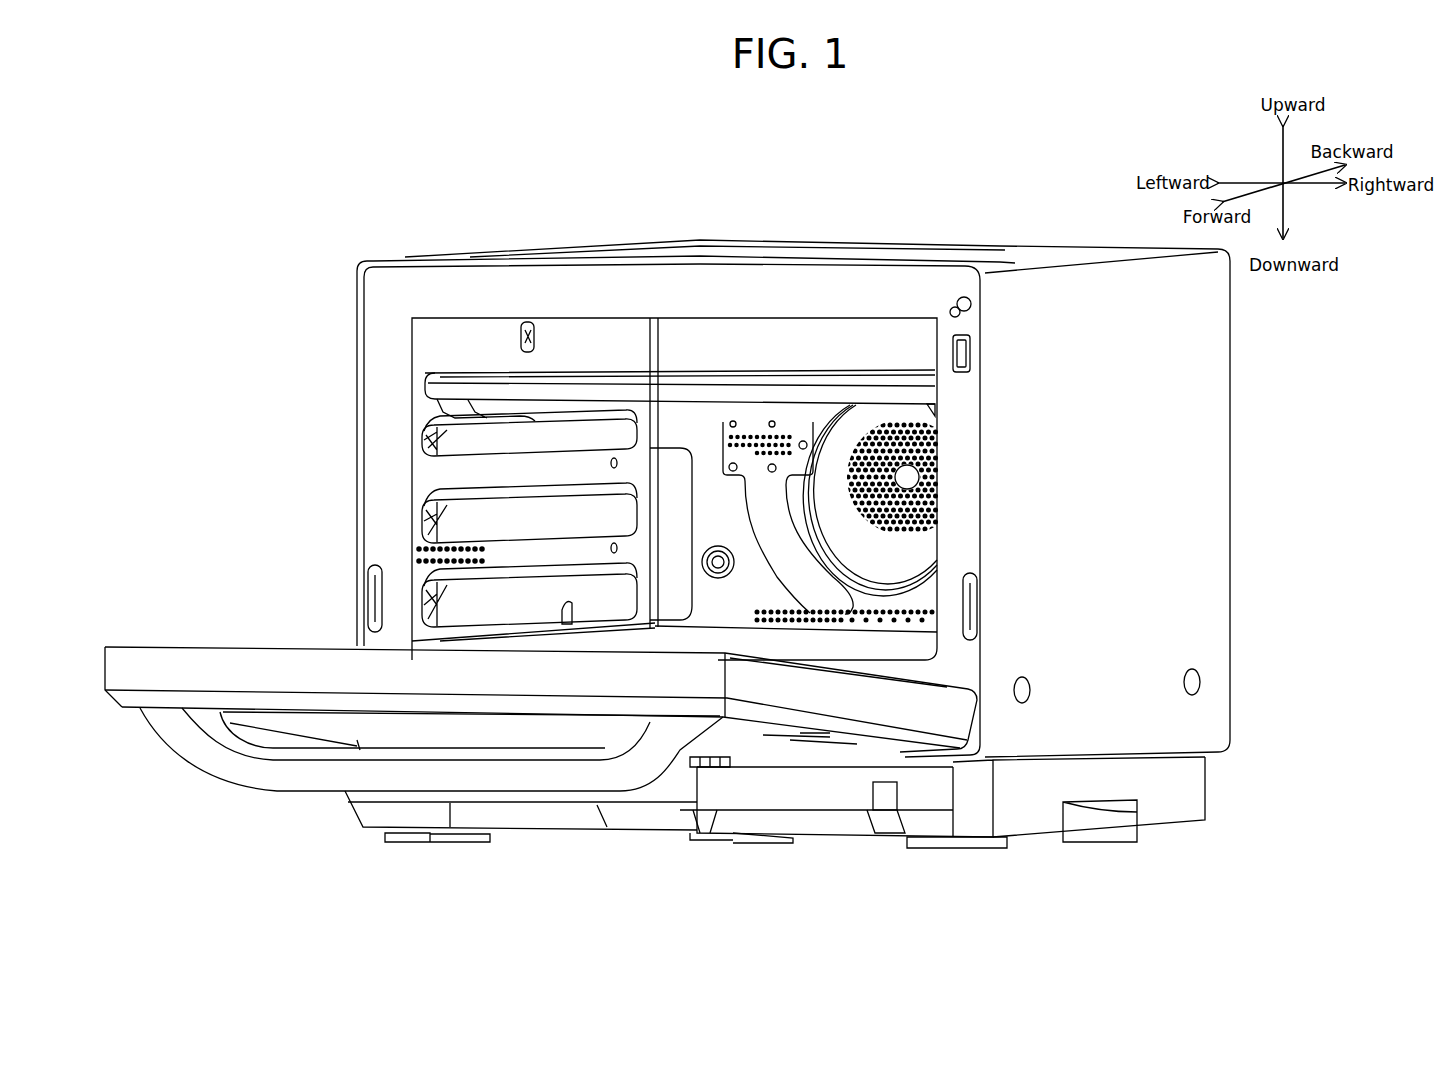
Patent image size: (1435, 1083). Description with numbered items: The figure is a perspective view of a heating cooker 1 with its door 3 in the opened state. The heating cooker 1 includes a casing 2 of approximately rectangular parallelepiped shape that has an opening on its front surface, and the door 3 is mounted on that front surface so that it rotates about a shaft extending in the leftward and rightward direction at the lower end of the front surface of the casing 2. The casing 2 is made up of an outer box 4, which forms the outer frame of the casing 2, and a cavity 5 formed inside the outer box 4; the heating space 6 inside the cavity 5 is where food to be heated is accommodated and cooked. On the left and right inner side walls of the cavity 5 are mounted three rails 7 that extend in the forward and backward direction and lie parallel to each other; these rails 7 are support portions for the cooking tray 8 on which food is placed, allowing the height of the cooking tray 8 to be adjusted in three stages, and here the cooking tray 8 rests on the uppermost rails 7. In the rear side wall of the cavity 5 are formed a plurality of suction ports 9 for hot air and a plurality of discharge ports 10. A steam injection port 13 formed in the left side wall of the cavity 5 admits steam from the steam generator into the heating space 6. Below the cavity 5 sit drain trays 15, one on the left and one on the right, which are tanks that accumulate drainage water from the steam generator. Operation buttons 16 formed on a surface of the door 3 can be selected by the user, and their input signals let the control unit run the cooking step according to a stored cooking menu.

The heating cooker 1 is at (296, 234).
The casing 2 is at (405, 278).
The door 3 is at (182, 665).
The outer box 4 is at (790, 258).
The cavity 5 is at (428, 343).
The heating space 6 is at (908, 593).
The rails 7 is at (452, 603).
The cooking tray 8 is at (866, 383).
The suction ports 9 is at (937, 516).
The discharge ports 10 is at (762, 434).
The steam injection port 13 is at (537, 322).
The drain trays 15 is at (650, 797).
The operation buttons 16 is at (812, 738).